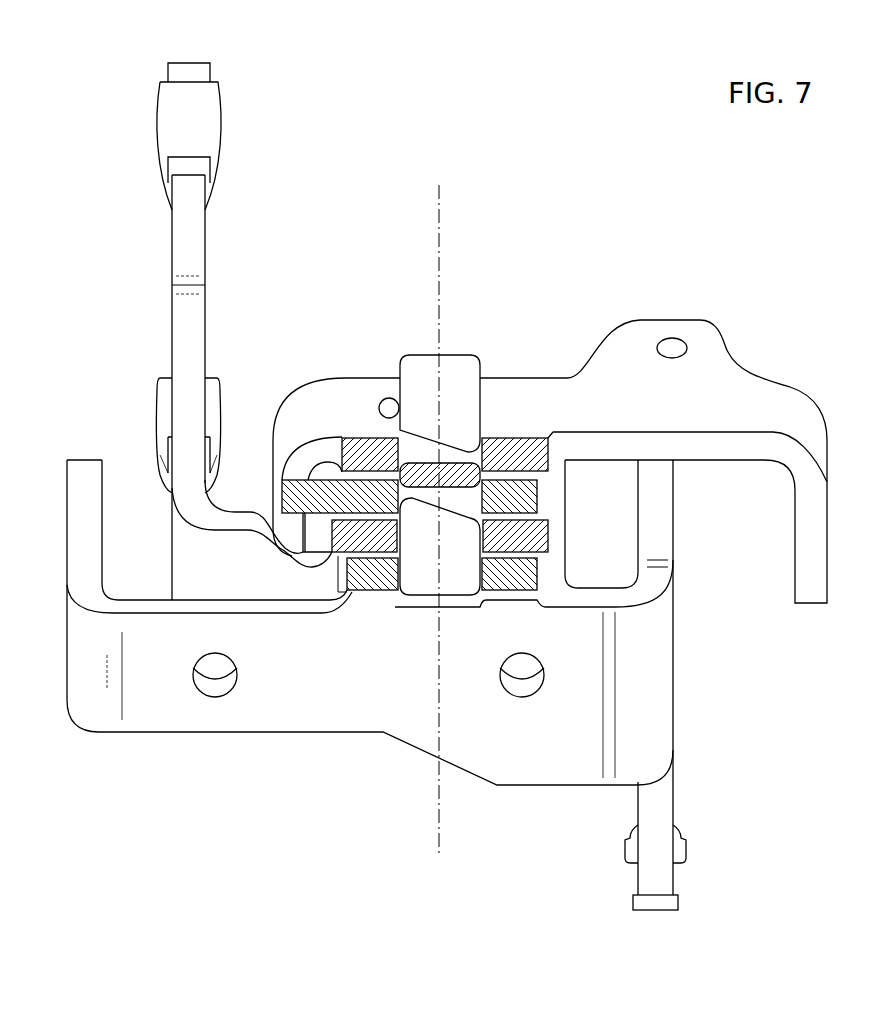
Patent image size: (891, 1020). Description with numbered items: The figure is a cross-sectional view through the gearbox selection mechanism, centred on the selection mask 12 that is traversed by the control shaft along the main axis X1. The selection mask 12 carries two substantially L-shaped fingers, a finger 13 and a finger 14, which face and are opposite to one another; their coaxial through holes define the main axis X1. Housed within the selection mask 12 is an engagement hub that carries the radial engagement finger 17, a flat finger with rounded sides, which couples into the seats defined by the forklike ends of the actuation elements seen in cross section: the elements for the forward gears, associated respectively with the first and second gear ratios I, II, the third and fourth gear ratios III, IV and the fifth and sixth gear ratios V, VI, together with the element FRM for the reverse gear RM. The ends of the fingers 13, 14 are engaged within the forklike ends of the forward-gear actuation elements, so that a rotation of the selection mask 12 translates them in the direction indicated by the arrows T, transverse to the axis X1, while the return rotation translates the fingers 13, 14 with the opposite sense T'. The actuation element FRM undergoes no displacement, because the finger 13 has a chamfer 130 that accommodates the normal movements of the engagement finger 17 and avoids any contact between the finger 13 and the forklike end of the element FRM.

The selection mask 12 is at (390, 386).
The finger 13 is at (475, 353).
The finger 14 is at (412, 582).
The radial engagement finger 17 is at (413, 462).
The chamfer 130 is at (452, 458).
The main axis X1 is at (439, 242).
The fourth forklike actuation element FRM is at (497, 378).
The reverse gear RM is at (553, 448).
The first forward gear ratio I is at (548, 567).
The second forward gear ratio II is at (352, 592).
The third forward gear ratio III is at (548, 538).
The fourth forward gear ratio IV is at (335, 522).
The fifth forward gear ratio V is at (540, 493).
The sixth forward gear ratio VI is at (282, 497).
The translation direction T is at (440, 468).
The opposite translation sense T' is at (449, 468).